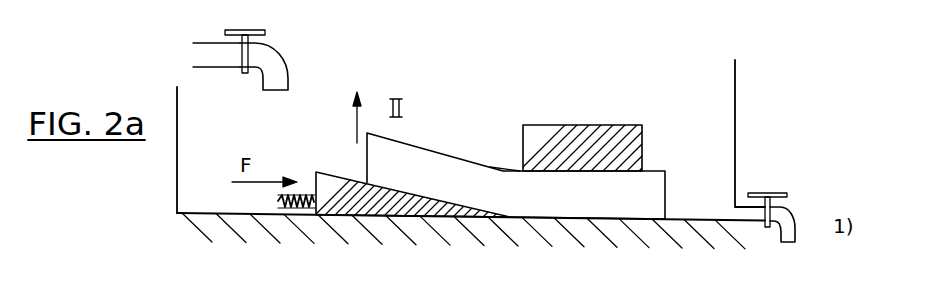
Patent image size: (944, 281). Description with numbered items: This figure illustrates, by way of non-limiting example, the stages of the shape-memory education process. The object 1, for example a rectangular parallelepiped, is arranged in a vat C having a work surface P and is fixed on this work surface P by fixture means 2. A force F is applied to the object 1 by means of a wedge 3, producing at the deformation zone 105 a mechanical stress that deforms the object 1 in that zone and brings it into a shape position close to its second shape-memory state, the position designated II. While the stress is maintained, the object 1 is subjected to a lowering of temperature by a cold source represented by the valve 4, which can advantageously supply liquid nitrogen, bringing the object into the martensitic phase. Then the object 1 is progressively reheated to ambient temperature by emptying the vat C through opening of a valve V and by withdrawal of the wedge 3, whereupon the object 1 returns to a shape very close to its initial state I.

The object 1 is at (425, 162).
The fixture means 2 is at (630, 155).
The wedge 3 is at (318, 171).
The valve 4 is at (283, 53).
The deformation zone 105 is at (504, 170).
The vat C is at (736, 107).
The valve V is at (790, 208).
The work surface P is at (557, 243).